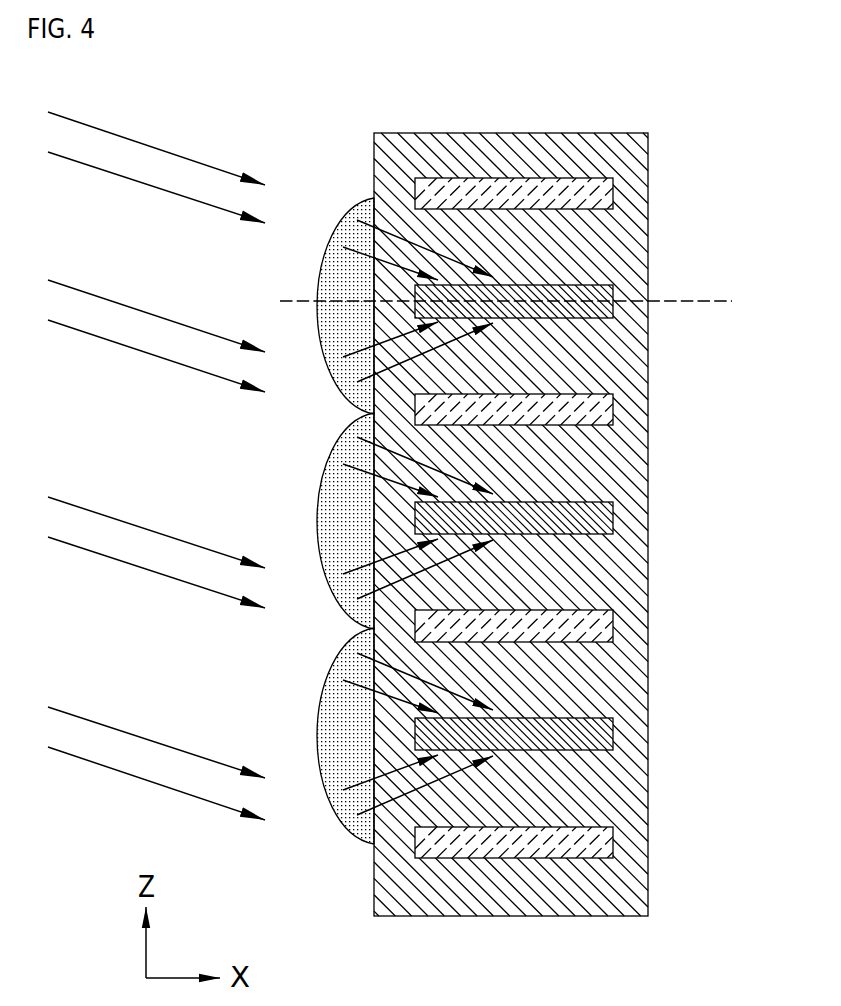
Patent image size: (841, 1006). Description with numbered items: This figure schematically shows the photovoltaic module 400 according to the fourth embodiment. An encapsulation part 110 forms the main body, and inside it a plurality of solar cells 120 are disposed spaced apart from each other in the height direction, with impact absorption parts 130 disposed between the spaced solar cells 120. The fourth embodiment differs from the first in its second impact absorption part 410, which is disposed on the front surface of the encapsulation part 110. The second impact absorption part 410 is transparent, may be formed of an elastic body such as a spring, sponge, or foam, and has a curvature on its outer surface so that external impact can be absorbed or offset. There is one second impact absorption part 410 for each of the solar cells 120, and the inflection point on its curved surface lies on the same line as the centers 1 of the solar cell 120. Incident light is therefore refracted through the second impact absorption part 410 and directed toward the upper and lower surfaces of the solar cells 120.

The photovoltaic module 400 is at (316, 128).
The second impact absorption part 410 is at (342, 719).
The encapsulation part 110 is at (627, 467).
The solar cells 120 is at (610, 287).
The impact absorption parts 130 is at (610, 192).
The centers of the solar cell 1 is at (492, 301).